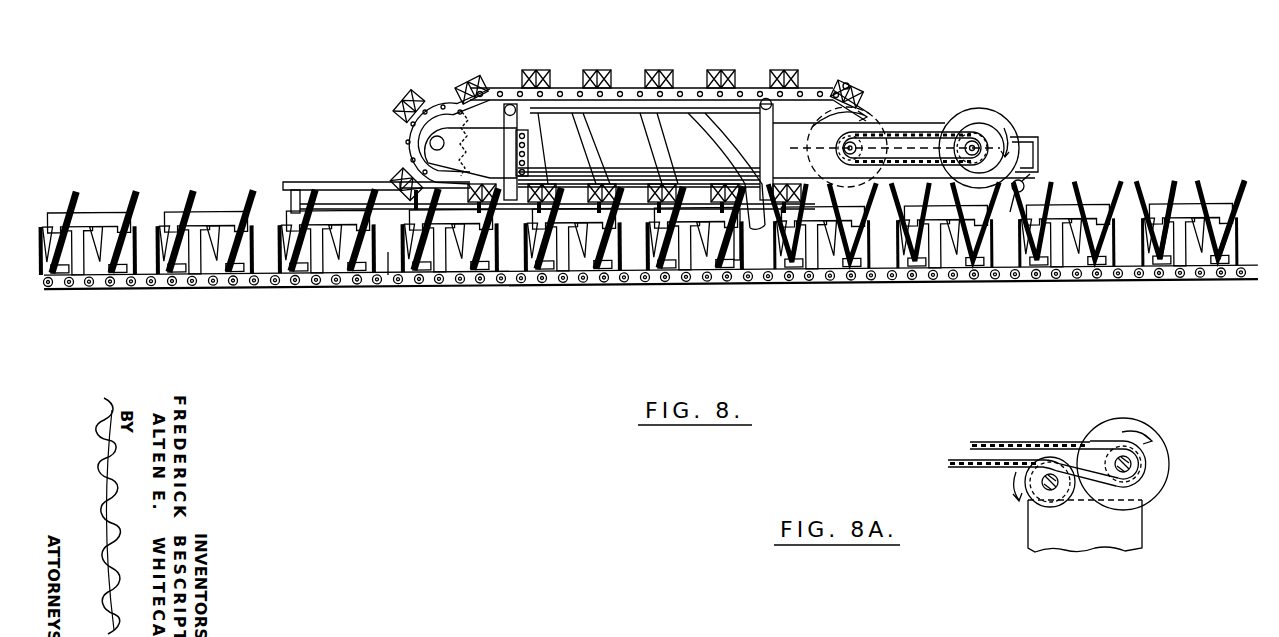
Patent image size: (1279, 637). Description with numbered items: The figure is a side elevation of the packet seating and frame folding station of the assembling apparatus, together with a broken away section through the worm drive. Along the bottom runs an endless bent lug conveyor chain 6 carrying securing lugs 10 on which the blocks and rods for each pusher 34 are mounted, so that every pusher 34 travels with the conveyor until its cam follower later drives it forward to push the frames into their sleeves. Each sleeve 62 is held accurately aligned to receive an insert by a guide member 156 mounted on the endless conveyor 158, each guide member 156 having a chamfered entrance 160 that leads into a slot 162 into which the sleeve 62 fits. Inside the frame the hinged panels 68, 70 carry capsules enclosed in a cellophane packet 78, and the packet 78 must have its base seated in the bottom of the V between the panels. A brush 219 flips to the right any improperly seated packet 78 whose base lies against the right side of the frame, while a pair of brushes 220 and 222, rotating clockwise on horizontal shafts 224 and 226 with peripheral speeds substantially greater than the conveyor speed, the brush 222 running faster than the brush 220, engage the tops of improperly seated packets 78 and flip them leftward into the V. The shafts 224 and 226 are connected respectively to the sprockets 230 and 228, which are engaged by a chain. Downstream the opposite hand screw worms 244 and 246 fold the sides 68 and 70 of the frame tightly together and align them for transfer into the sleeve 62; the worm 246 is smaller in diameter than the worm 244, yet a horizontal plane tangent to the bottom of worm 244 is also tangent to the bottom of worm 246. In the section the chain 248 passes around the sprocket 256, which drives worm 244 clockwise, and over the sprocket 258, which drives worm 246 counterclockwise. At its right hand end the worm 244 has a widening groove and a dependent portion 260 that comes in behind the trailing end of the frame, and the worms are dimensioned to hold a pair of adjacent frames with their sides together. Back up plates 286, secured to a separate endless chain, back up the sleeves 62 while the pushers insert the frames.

In FIG. 8, the endless bent lug conveyor chain 6 is at (508, 284).
In FIG. 8, the securing lug 10 is at (350, 280).
In FIG. 8, the pusher 34 is at (211, 214).
In FIG. 8, the sleeve 62 is at (78, 201).
In FIG. 8, the panel 68 is at (1205, 193).
In FIG. 8A, the panel 68 is at (1144, 528).
In FIG. 8, the panel 70 is at (1247, 190).
In FIG. 8, the cellophane packet 78 is at (1178, 195).
In FIG. 8, the guide member 156 is at (481, 84).
In FIG. 8, the endless conveyor 158 is at (621, 89).
In FIG. 8, the chamfered entrance 160 is at (477, 76).
In FIG. 8, the slot 162 is at (849, 84).
In FIG. 8, the brush 219 is at (1026, 196).
In FIG. 8, the brush 220 is at (988, 116).
In FIG. 8, the brush 222 is at (880, 118).
In FIG. 8, the horizontal shaft 224 is at (990, 133).
In FIG. 8, the horizontal shaft 226 is at (840, 149).
In FIG. 8, the sprocket 228 is at (878, 130).
In FIG. 8, the sprocket 230 is at (950, 127).
In FIG. 8, the screw worm 244 is at (635, 149).
In FIG. 8A, the screw worm 244 is at (1160, 456).
In FIG. 8A, the screw worm 246 is at (1025, 470).
In FIG. 8, the chain 248 is at (530, 130).
In FIG. 8A, the chain 248 is at (1022, 442).
In FIG. 8A, the sprocket 256 is at (1138, 467).
In FIG. 8A, the sprocket 258 is at (1032, 492).
In FIG. 8, the dependent portion 260 is at (737, 262).
In FIG. 8, the back up plate 286 is at (388, 252).